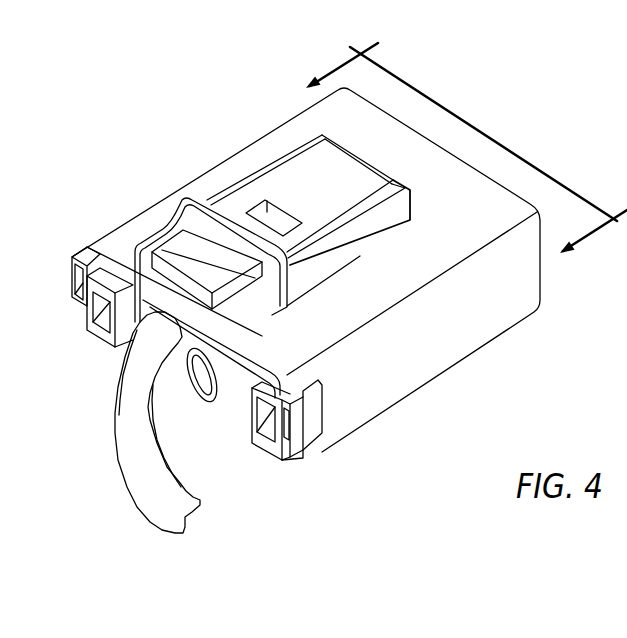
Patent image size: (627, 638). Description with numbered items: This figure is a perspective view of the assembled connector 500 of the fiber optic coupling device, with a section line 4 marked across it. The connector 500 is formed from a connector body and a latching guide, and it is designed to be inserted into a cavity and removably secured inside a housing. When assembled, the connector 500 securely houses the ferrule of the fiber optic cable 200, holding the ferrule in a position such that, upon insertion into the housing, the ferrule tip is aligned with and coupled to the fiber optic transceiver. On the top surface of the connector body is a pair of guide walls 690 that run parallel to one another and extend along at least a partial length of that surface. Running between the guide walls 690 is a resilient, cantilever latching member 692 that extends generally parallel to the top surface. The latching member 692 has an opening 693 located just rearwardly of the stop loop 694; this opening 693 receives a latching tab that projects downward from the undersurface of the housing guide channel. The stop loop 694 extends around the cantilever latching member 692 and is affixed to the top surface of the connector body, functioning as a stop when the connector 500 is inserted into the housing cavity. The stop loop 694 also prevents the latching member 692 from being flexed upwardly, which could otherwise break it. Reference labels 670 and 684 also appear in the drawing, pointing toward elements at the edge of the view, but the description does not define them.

The section line 4 is at (466, 134).
The fiber optic cable 200 is at (153, 505).
The connector 500 is at (141, 103).
The cable 670 is at (603, 0).
The cable strain relief 684 is at (626, 58).
The guide walls 690 is at (333, 255).
The cantilever latching member 692 is at (208, 255).
The opening 693 is at (265, 233).
The stop loop 694 is at (263, 308).